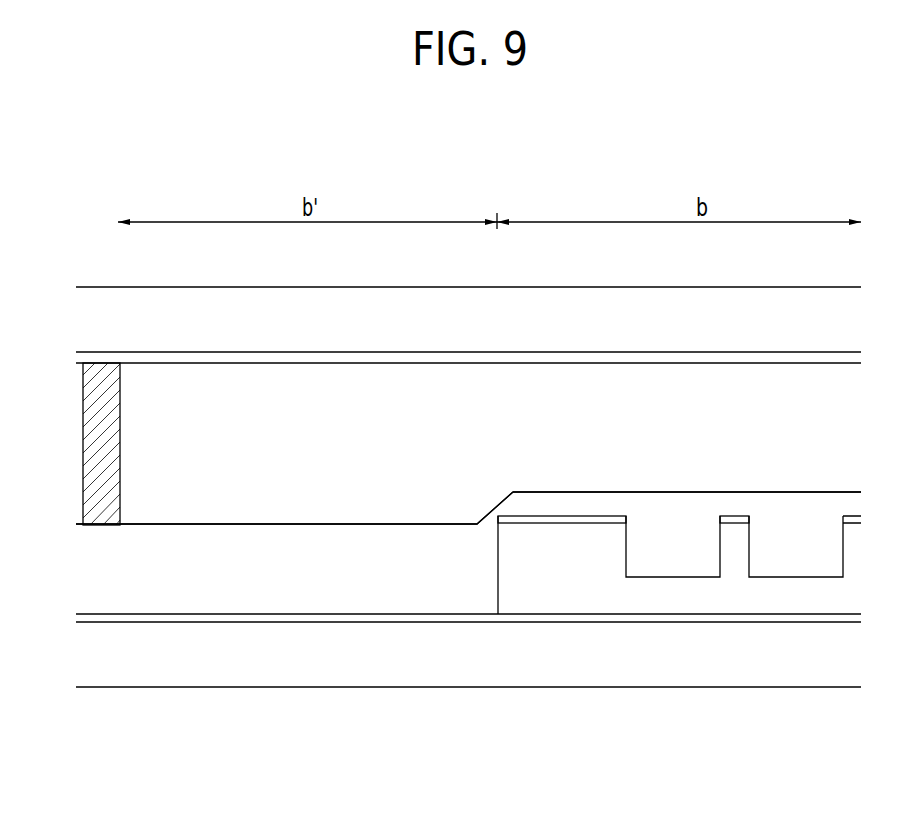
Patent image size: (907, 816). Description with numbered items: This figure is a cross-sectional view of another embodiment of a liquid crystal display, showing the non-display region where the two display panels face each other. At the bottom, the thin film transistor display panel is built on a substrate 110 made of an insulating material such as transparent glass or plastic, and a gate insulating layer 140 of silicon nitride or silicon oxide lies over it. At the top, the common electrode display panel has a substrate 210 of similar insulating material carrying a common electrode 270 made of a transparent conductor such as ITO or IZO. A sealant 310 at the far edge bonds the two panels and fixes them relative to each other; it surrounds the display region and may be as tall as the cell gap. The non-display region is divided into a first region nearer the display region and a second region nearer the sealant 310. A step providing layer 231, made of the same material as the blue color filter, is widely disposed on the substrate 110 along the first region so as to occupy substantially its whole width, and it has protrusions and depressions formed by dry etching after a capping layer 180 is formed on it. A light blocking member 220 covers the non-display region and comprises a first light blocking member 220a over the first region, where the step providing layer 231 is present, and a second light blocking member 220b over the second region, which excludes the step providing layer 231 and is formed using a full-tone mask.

The substrate 110 is at (268, 668).
The gate insulating layer 140 is at (397, 615).
The capping layer 180 is at (590, 520).
The substrate 210 is at (394, 300).
The light blocking member 220 is at (744, 778).
The first light blocking member 220a is at (704, 498).
The second light blocking member 220b is at (254, 542).
The step providing layer 231 is at (558, 587).
The common electrode 270 is at (559, 358).
The sealant 310 is at (105, 431).